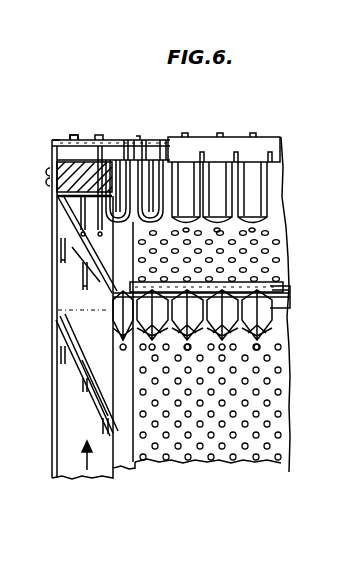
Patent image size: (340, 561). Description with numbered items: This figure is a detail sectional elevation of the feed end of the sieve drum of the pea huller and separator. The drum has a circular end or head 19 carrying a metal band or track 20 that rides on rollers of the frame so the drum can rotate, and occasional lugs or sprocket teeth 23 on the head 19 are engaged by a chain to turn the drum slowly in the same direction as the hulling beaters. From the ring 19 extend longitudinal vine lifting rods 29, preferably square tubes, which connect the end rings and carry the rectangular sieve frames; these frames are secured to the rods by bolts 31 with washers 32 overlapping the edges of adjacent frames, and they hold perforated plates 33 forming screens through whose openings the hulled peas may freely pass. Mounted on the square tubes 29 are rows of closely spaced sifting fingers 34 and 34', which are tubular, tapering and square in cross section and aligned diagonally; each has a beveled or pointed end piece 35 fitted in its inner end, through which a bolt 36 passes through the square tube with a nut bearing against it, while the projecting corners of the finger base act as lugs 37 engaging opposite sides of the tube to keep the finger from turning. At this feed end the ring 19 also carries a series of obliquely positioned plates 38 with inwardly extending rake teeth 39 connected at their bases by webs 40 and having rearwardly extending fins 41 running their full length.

The ends or heads 19 is at (57, 178).
The metal bands or tracks 20 is at (62, 140).
The lugs or sprocket teeth 23 is at (78, 138).
The longitudinal vine lifting rods 29 is at (62, 153).
The bolts 31 is at (138, 137).
The washers 32 is at (151, 147).
The perforated plates 33 is at (273, 238).
The sifting fingers 34 is at (243, 197).
The lower tube 34' is at (218, 320).
The beveled or pointed end pieces 35 is at (141, 224).
The bolts 36 is at (125, 165).
The lugs 37 is at (224, 156).
The obliquely positioned plates 38 is at (68, 372).
The rake teeth 39 is at (88, 382).
The webs 40 is at (67, 203).
The fins 41 is at (30, 356).